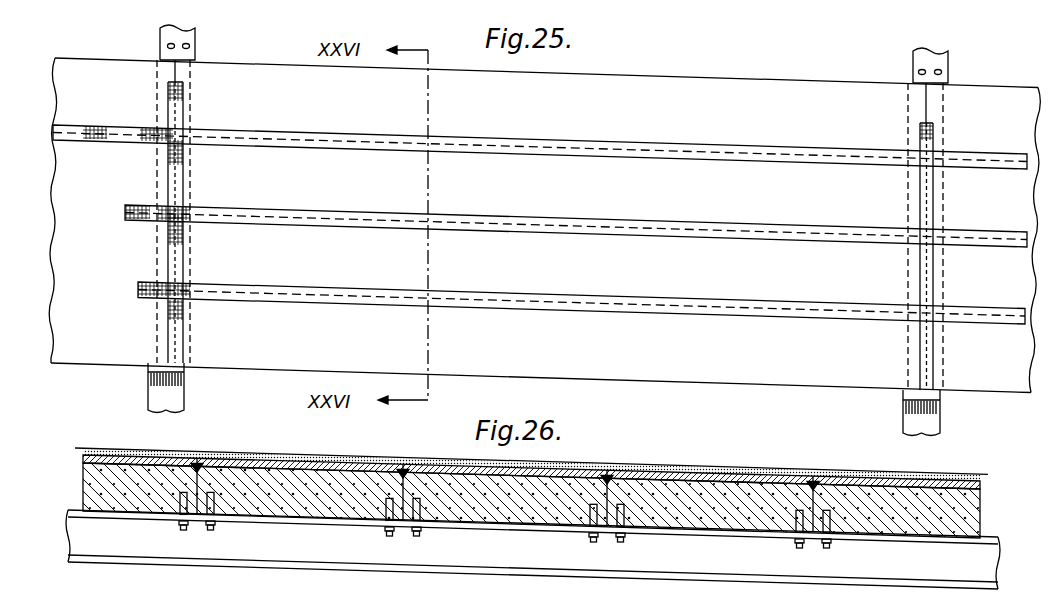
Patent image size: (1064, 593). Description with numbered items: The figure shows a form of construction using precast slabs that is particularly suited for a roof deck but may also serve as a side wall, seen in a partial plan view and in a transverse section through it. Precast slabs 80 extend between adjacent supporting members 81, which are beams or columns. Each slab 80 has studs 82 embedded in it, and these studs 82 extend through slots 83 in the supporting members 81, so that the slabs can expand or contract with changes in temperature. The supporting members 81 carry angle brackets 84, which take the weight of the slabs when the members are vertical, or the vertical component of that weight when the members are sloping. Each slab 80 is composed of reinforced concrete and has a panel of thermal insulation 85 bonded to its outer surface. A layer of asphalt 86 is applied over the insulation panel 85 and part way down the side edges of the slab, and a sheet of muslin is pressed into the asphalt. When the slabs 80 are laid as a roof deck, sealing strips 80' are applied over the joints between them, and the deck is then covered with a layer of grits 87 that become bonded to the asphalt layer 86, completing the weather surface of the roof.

In FIG. 25, the precast slab 80 is at (544, 225).
In FIG. 26, the precast slab 80 is at (531, 508).
In FIG. 25, the sealing strip 80' is at (540, 224).
In FIG. 25, the supporting member 81 is at (150, 399).
In FIG. 26, the supporting member 81 is at (533, 549).
In FIG. 26, the stud 82 is at (211, 529).
In FIG. 25, the slot 83 is at (166, 43).
In FIG. 25, the angle bracket 84 is at (147, 373).
In FIG. 26, the panel of thermal insulation 85 is at (401, 462).
In FIG. 26, the layer of asphalt 86 is at (349, 464).
In FIG. 26, the layer of grits 87 is at (263, 453).